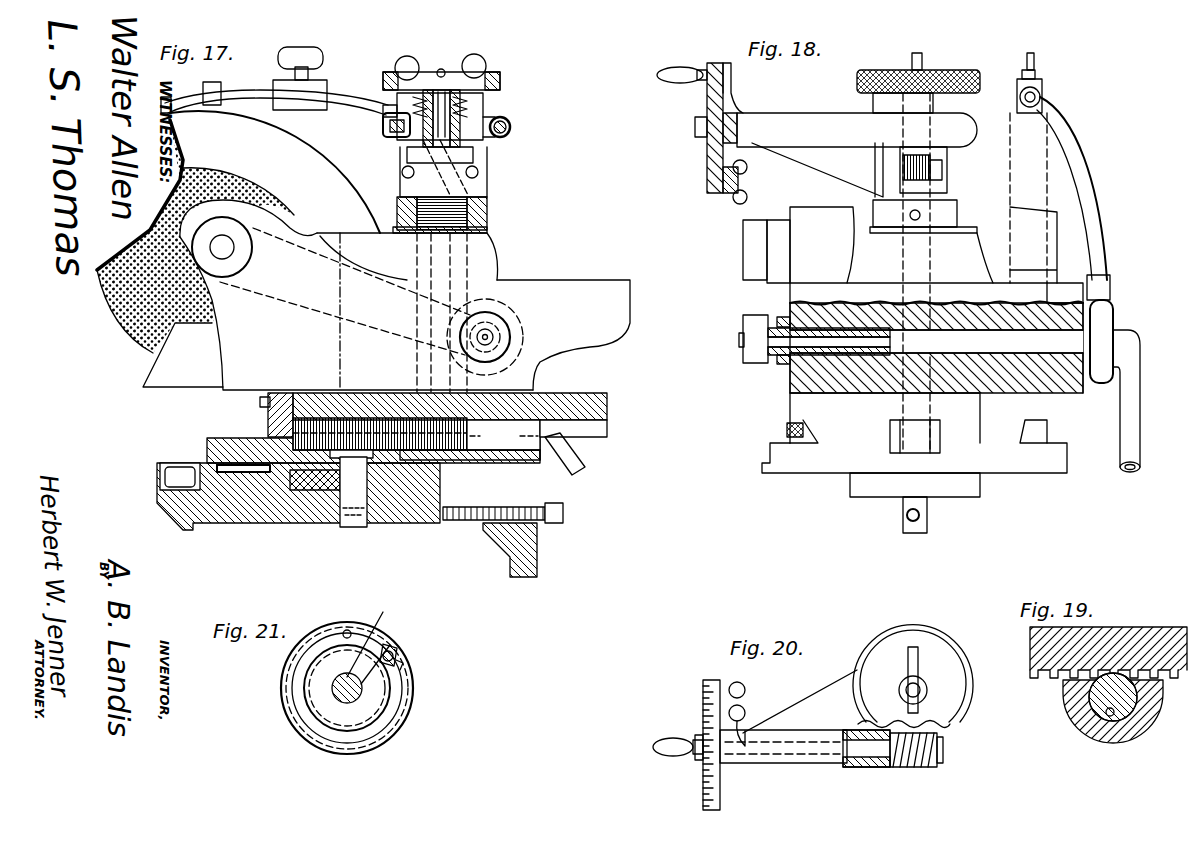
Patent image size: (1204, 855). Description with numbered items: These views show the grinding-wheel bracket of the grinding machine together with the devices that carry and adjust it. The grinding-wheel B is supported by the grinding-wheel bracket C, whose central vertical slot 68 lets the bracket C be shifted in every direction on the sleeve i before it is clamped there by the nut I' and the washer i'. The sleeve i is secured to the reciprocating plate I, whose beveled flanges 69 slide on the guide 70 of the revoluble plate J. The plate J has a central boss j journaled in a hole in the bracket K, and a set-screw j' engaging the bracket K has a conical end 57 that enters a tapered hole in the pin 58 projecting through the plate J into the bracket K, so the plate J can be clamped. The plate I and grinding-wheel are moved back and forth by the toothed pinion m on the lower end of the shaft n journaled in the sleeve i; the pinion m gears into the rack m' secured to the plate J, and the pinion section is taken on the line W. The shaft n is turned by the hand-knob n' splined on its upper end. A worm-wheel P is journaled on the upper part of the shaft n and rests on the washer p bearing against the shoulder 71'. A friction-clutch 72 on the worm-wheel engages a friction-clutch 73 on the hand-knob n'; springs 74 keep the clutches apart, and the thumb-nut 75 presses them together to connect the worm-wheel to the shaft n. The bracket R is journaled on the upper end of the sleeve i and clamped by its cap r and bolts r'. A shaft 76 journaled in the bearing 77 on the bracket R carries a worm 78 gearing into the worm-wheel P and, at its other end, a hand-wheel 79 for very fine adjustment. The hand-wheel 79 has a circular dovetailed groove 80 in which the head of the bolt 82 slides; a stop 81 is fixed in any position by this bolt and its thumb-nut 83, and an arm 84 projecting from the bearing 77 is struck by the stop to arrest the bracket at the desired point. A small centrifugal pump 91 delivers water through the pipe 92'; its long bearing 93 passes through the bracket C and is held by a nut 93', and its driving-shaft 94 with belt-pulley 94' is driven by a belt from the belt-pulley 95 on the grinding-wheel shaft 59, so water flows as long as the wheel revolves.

In FIG. 17, the grinding-wheel B is at (138, 332).
In FIG. 17, the grinding-wheel bracket C is at (386, 296).
In FIG. 17, the central vertical slot 68 is at (373, 243).
In FIG. 17, the belt-pulley 95 is at (220, 277).
In FIG. 17, the grinding-wheel shaft 59 is at (230, 249).
In FIG. 17, the centrifugal pump 91 is at (517, 311).
In FIG. 18, the centrifugal pump 91 is at (1103, 330).
In FIG. 17, the driving-shaft 94 is at (511, 337).
In FIG. 18, the driving-shaft 94 is at (732, 339).
In FIG. 17, the belt-pulley 94' is at (439, 342).
In FIG. 18, the belt-pulley 94' is at (791, 352).
In FIG. 17, the pipe 92' is at (274, 81).
In FIG. 18, the pipe 92' is at (1063, 176).
In FIG. 17, the springs 74 is at (390, 113).
In FIG. 17, the thumb-nut 75 is at (480, 64).
In FIG. 18, the thumb-nut 75 is at (922, 50).
In FIG. 20, the thumb-nut 75 is at (919, 661).
In FIG. 17, the hand-knob n' is at (457, 79).
In FIG. 18, the hand-knob n' is at (918, 85).
In FIG. 17, the worm-wheel P is at (487, 110).
In FIG. 20, the worm-wheel P is at (913, 676).
In FIG. 17, the washer p is at (420, 145).
In FIG. 17, the friction-clutch 73 is at (483, 103).
In FIG. 17, the friction-clutch 72 is at (390, 120).
In FIG. 17, the shaft 76 is at (513, 122).
In FIG. 21, the shaft 76 is at (363, 689).
In FIG. 20, the shaft 76 is at (868, 768).
In FIG. 17, the worm 78 is at (512, 132).
In FIG. 20, the worm 78 is at (925, 768).
In FIG. 17, the shaft n is at (451, 152).
In FIG. 20, the shaft n is at (901, 688).
In FIG. 19, the shaft n is at (1108, 739).
In FIG. 17, the sleeve i is at (478, 167).
In FIG. 18, the sleeve i is at (943, 271).
In FIG. 19, the sleeve i is at (1100, 711).
In FIG. 17, the shoulder 71' is at (395, 167).
In FIG. 17, the bracket R is at (487, 181).
In FIG. 18, the bracket R is at (817, 170).
In FIG. 20, the bracket R is at (800, 701).
In FIG. 17, the nut I' is at (457, 212).
In FIG. 18, the nut I' is at (923, 213).
In FIG. 17, the washer i' is at (455, 232).
In FIG. 18, the washer i' is at (931, 228).
In FIG. 17, the rack m' is at (261, 415).
In FIG. 19, the rack m' is at (1099, 660).
In FIG. 17, the reciprocating plate I is at (465, 426).
In FIG. 18, the reciprocating plate I is at (916, 373).
In FIG. 17, the feed screw W is at (398, 434).
In FIG. 17, the toothed pinion m is at (503, 435).
In FIG. 19, the toothed pinion m is at (1095, 718).
In FIG. 17, the beveled flanges 69 is at (600, 433).
In FIG. 18, the beveled flanges 69 is at (785, 425).
In FIG. 17, the guide 70 is at (545, 460).
In FIG. 18, the guide 70 is at (941, 436).
In FIG. 17, the revoluble plate J is at (218, 441).
In FIG. 18, the revoluble plate J is at (806, 468).
In FIG. 17, the bracket K is at (240, 513).
In FIG. 17, the central boss j is at (311, 513).
In FIG. 18, the central boss j is at (915, 497).
In FIG. 17, the set-screw j' is at (490, 540).
In FIG. 17, the pin 58 is at (337, 525).
In FIG. 18, the pin 58 is at (927, 517).
In FIG. 17, the conical end 57 is at (352, 527).
In FIG. 18, the hand-wheel 79 is at (707, 155).
In FIG. 21, the hand-wheel 79 is at (410, 717).
In FIG. 20, the hand-wheel 79 is at (703, 784).
In FIG. 18, the circular dovetailed groove 80 is at (707, 183).
In FIG. 21, the circular dovetailed groove 80 is at (374, 731).
In FIG. 18, the arm 84 is at (732, 84).
In FIG. 21, the arm 84 is at (383, 612).
In FIG. 20, the arm 84 is at (740, 743).
In FIG. 18, the bearing 77 is at (850, 130).
In FIG. 21, the bearing 77 is at (340, 693).
In FIG. 20, the bearing 77 is at (812, 764).
In FIG. 18, the bolt 82 is at (747, 180).
In FIG. 21, the bolt 82 is at (400, 652).
In FIG. 18, the thumb-nut 83 is at (747, 200).
In FIG. 21, the thumb-nut 83 is at (393, 645).
In FIG. 20, the thumb-nut 83 is at (746, 691).
In FIG. 18, the stop 81 is at (730, 193).
In FIG. 21, the stop 81 is at (404, 660).
In FIG. 18, the cap r is at (935, 170).
In FIG. 18, the bolts r' is at (937, 168).
In FIG. 18, the long bearing 93 is at (998, 341).
In FIG. 18, the nut 93' is at (811, 364).